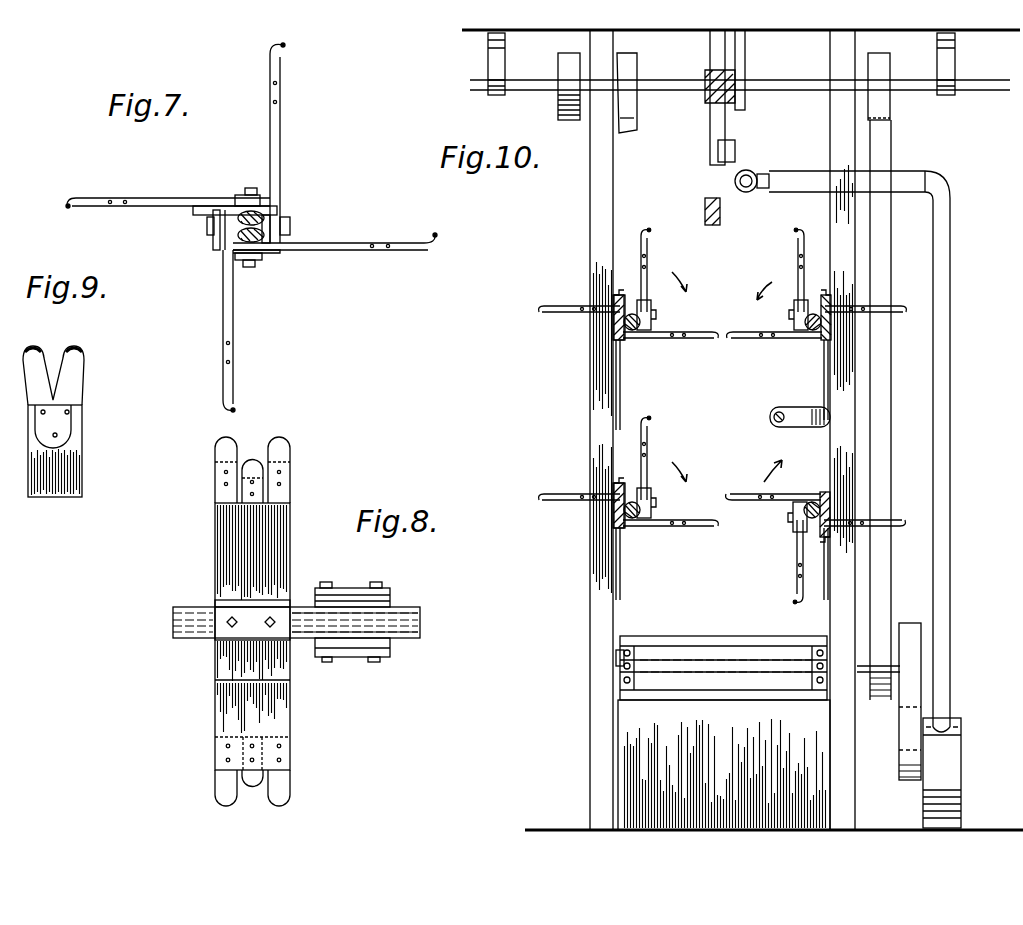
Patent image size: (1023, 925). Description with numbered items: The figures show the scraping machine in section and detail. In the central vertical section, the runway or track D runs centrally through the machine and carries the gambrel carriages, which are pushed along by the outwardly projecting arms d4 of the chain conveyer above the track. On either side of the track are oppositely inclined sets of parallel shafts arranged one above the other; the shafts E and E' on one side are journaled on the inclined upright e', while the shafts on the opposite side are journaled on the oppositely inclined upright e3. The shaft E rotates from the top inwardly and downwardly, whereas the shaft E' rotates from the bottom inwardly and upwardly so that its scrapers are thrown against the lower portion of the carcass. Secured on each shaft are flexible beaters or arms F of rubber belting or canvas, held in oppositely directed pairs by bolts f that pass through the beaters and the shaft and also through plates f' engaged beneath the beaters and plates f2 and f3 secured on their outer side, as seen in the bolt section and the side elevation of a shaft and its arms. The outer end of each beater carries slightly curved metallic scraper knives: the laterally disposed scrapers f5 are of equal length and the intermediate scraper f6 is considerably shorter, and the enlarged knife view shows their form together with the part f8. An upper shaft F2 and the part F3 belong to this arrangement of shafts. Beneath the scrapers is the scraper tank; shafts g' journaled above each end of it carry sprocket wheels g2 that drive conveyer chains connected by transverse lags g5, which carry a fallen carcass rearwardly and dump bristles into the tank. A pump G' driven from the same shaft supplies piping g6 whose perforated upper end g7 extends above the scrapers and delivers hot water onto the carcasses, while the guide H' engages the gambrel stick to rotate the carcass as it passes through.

In FIG. 7, the flexible beaters or arms F is at (283, 152).
In FIG. 8, the flexible beaters or arms F is at (226, 530).
In FIG. 10, the flexible beaters or arms F is at (796, 340).
In FIG. 7, the plates f' is at (251, 223).
In FIG. 8, the plates f' is at (368, 649).
In FIG. 10, the plates f' is at (723, 428).
In FIG. 7, the laterally disposed scrapers f5 is at (284, 62).
In FIG. 8, the laterally disposed scrapers f5 is at (214, 455).
In FIG. 10, the laterally disposed scrapers f5 is at (710, 527).
In FIG. 7, the plate f2 is at (228, 201).
In FIG. 8, the plate f2 is at (280, 605).
In FIG. 7, the plate f3 is at (246, 188).
In FIG. 8, the plate f3 is at (218, 608).
In FIG. 7, the bolts f is at (279, 197).
In FIG. 8, the bolts f is at (356, 628).
In FIG. 8, the intermediate scraper f6 is at (252, 462).
In FIG. 9, the forked end f8 is at (90, 360).
In FIG. 9, the upper shaft F2 is at (85, 465).
In FIG. 10, the upper shaft F2 is at (600, 326).
In FIG. 10, the bracket F3 is at (605, 508).
In FIG. 7, the shaft E is at (211, 245).
In FIG. 8, the shaft E is at (290, 641).
In FIG. 10, the shaft E is at (722, 416).
In FIG. 10, the shaft E' is at (722, 470).
In FIG. 10, the outwardly projecting arms d4 is at (710, 50).
In FIG. 10, the runway or track D is at (736, 148).
In FIG. 10, the guide H' is at (697, 205).
In FIG. 10, the upper end of piping g7 is at (746, 194).
In FIG. 10, the piping g6 is at (919, 450).
In FIG. 10, the transverse lags g5 is at (680, 658).
In FIG. 10, the shaft g' is at (726, 639).
In FIG. 10, the sprocket wheels g2 is at (615, 678).
In FIG. 10, the upright e3 is at (597, 732).
In FIG. 10, the upright e' is at (742, 430).
In FIG. 10, the pump G' is at (962, 773).